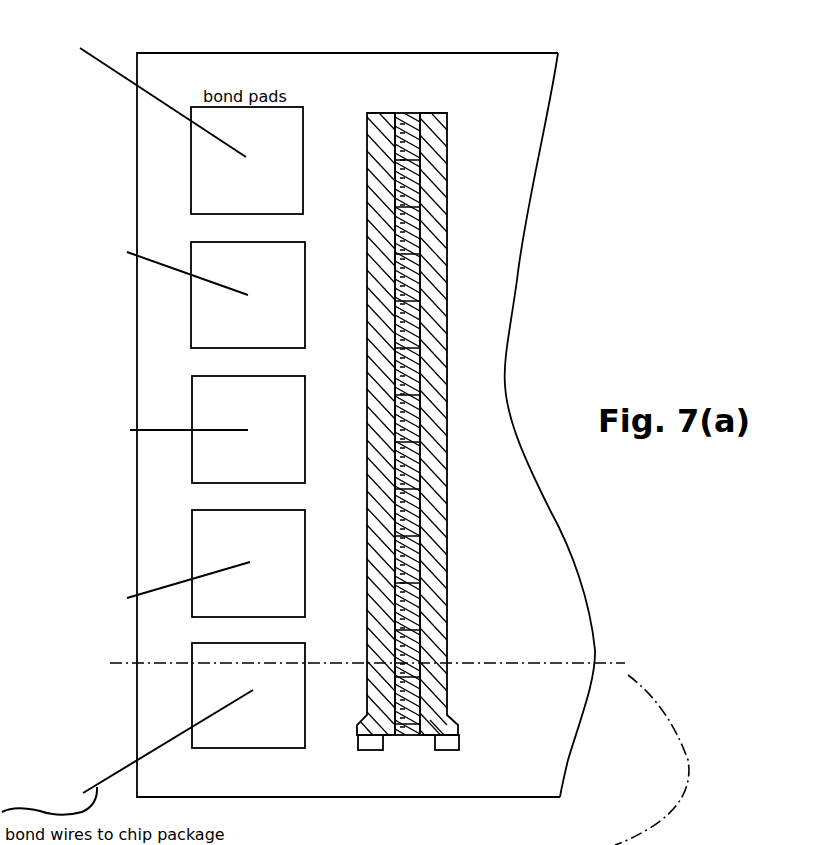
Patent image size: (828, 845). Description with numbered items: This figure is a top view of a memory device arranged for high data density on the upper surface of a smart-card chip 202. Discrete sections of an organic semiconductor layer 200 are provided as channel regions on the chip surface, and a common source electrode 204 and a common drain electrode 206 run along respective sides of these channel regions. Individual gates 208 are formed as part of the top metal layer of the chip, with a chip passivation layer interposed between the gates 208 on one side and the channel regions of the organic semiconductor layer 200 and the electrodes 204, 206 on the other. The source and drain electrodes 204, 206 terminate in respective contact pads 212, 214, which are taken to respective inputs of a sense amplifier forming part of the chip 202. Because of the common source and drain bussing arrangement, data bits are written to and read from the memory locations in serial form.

The organic semiconductor layer 200 is at (408, 113).
The chip 202 is at (518, 228).
The common source electrode 204 is at (368, 116).
The common drain electrode 206 is at (447, 137).
The gates 208 is at (413, 485).
The contact pad 212 is at (372, 745).
The contact pad 214 is at (447, 745).